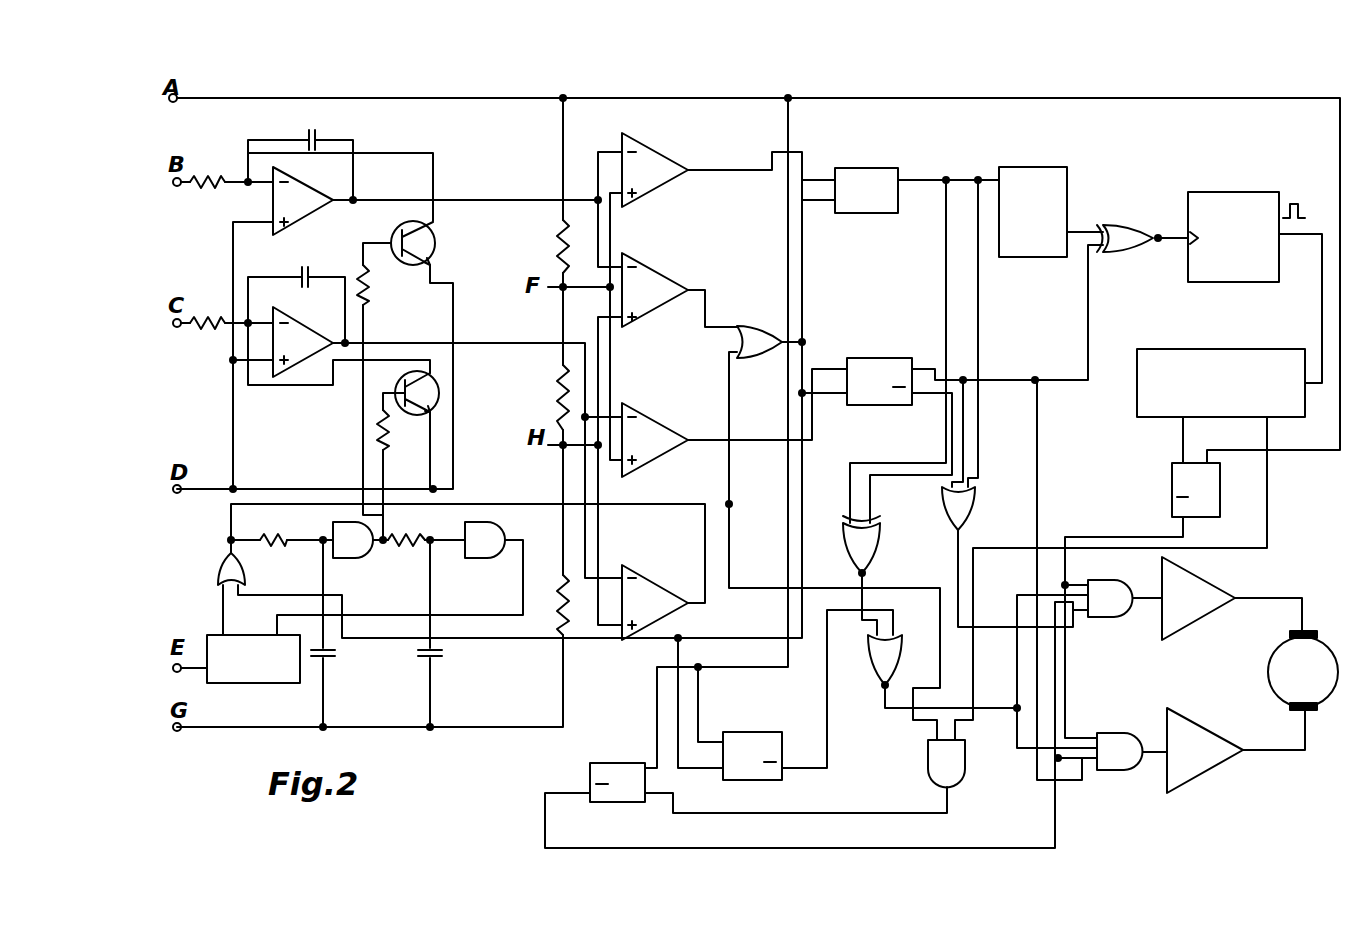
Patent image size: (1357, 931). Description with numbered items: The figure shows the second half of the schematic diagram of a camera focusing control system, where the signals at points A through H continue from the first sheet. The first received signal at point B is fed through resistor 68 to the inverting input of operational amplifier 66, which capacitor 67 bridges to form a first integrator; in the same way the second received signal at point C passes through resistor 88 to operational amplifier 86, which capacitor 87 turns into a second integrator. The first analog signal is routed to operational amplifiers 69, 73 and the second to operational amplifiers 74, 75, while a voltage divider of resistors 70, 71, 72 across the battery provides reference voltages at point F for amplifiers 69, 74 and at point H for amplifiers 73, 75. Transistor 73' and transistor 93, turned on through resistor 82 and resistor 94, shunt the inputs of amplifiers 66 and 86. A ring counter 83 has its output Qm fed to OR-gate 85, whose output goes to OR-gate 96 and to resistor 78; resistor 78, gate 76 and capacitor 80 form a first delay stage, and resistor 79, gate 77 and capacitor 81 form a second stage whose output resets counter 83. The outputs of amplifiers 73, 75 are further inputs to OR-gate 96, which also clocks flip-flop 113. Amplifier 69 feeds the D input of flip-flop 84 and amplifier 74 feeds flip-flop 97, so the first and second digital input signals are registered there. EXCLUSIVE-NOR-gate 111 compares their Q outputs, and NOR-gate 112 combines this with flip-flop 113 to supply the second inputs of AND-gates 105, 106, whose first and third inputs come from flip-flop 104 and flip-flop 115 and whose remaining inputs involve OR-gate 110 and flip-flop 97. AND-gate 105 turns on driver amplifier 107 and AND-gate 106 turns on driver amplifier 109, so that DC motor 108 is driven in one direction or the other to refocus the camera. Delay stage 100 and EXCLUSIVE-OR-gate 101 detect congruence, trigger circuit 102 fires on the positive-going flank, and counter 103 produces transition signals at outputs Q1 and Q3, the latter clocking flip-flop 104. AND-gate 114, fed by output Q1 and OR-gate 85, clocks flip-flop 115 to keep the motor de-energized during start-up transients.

The operational amplifier 66 is at (273, 197).
The capacitor 67 is at (318, 124).
The resistor 68 is at (205, 178).
The operational amplifier 69 is at (658, 160).
The resistor 70 is at (558, 250).
The resistor 71 is at (558, 398).
The resistor 72 is at (558, 595).
The operational amplifier 73 is at (655, 281).
The transistor 73' is at (438, 238).
The operational amplifier 74 is at (655, 425).
The operational amplifier 75 is at (652, 592).
The gate 76 is at (350, 558).
The gate 77 is at (492, 558).
The resistor 78 is at (265, 536).
The resistor 79 is at (412, 546).
The capacitor 80 is at (337, 653).
The capacitor 81 is at (445, 653).
The resistor 82 is at (368, 290).
The ring counter 83 is at (210, 633).
The flip-flop 84 is at (882, 167).
The OR-gate 85 is at (217, 560).
The operational amplifier 86 is at (298, 380).
The capacitor 87 is at (306, 264).
The resistor 88 is at (205, 315).
The transistor 93 is at (440, 383).
The resistor 94 is at (390, 430).
The OR-gate 96 is at (752, 320).
The flip-flop 97 is at (848, 357).
The delay stage 100 is at (1028, 167).
The EXCLUSIVE-OR-gate 101 is at (1118, 224).
The trigger circuit 102 is at (1213, 192).
The counter 103 is at (1203, 349).
The flip-flop 104 is at (1220, 505).
The AND-gate 105 is at (1100, 578).
The AND-gate 106 is at (1090, 770).
The driver amplifier 107 is at (1182, 618).
The DC motor 108 is at (1318, 690).
The driver amplifier 109 is at (1188, 775).
The OR-gate 110 is at (978, 500).
The EXCLUSIVE-NOR-gate 111 is at (843, 537).
The NOR-gate 112 is at (878, 672).
The flip-flop 113 is at (750, 780).
The AND-gate 114 is at (965, 760).
The flip-flop 115 is at (590, 770).